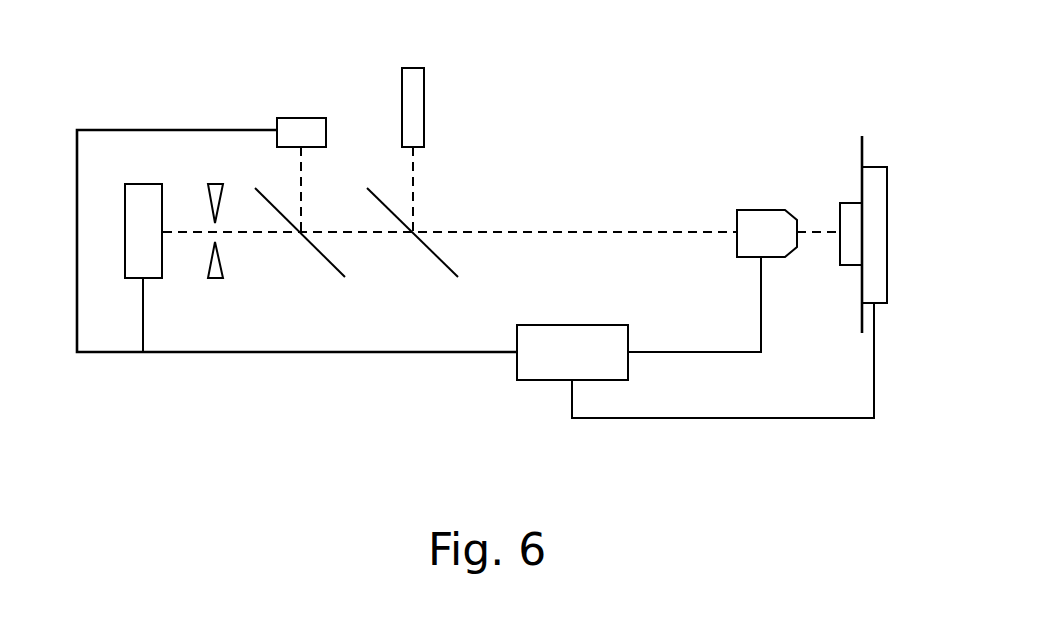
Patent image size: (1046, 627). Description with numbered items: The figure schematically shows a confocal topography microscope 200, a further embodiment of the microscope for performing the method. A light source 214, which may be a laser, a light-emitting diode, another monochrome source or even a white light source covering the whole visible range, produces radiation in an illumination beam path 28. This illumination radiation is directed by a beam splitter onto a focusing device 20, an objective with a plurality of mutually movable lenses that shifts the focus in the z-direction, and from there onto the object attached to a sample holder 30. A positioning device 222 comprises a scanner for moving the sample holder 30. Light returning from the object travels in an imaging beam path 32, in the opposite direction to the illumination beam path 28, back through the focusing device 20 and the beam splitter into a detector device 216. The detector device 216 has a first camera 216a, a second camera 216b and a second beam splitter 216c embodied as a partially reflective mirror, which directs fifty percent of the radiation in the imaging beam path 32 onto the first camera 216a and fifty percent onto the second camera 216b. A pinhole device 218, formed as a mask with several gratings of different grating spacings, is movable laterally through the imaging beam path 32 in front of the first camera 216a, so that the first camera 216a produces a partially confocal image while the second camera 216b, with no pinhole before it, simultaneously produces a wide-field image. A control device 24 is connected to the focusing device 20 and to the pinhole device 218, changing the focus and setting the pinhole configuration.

The confocal topography microscope 200 is at (585, 152).
The detector device 216 is at (237, 101).
The first camera 216a is at (150, 279).
The second camera 216b is at (301, 118).
The second beam splitter 216c is at (312, 252).
The pinhole device 218 is at (215, 183).
The imaging beam path 32 is at (273, 234).
The light source 214 is at (424, 107).
The illumination beam path 28 is at (415, 193).
The focusing device 20 is at (760, 210).
The sample holder 30 is at (860, 140).
The positioning device 222 is at (873, 167).
The control device 24 is at (548, 381).